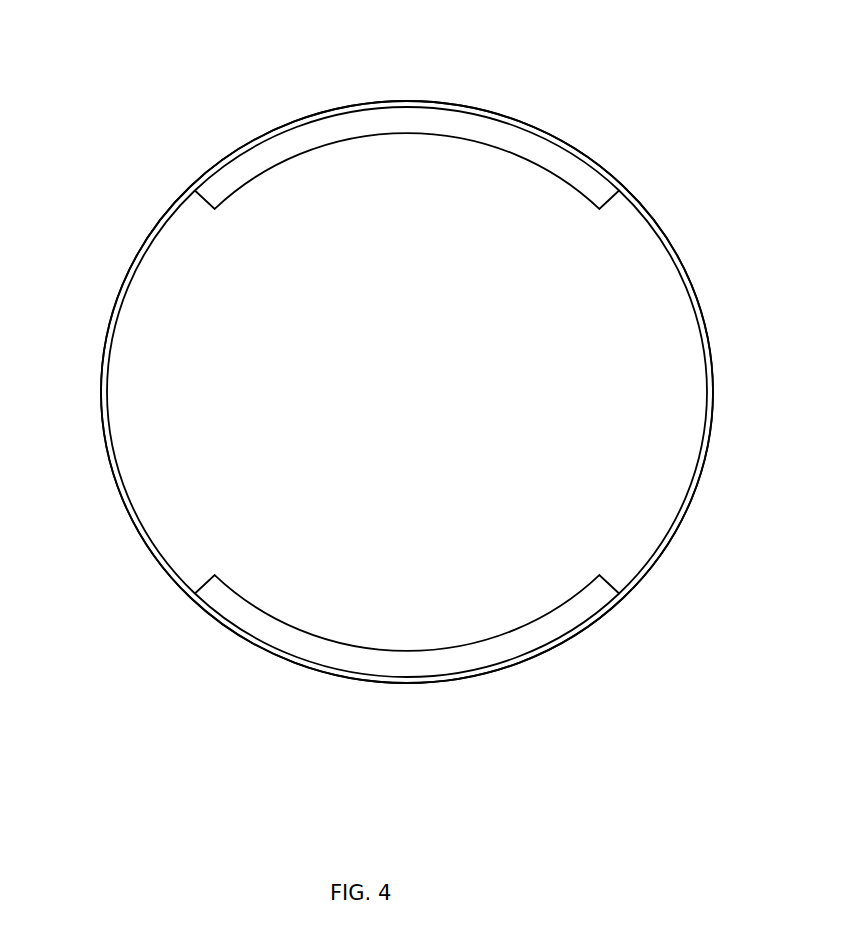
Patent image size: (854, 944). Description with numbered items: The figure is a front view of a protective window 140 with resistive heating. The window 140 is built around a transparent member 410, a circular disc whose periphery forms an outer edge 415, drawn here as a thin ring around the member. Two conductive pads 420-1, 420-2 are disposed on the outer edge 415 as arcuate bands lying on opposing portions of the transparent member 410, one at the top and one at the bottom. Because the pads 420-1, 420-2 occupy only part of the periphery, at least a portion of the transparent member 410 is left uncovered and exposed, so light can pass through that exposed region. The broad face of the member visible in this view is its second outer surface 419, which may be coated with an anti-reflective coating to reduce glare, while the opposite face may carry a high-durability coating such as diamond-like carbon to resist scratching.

The protective window 140 is at (620, 62).
The transparent member 410 is at (131, 534).
The outer edge 415 is at (158, 221).
The second outer surface 419 is at (240, 318).
The conductive pad 420-1 is at (390, 122).
The conductive pad 420-2 is at (496, 649).